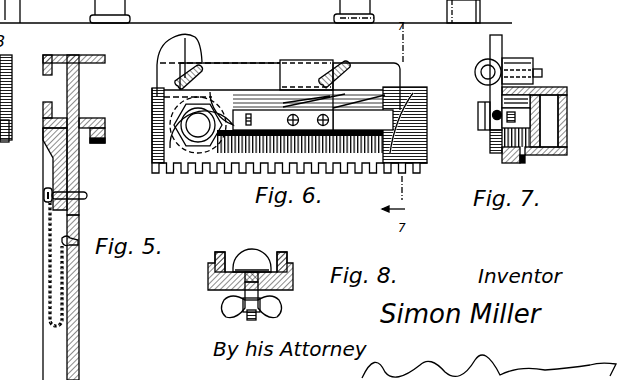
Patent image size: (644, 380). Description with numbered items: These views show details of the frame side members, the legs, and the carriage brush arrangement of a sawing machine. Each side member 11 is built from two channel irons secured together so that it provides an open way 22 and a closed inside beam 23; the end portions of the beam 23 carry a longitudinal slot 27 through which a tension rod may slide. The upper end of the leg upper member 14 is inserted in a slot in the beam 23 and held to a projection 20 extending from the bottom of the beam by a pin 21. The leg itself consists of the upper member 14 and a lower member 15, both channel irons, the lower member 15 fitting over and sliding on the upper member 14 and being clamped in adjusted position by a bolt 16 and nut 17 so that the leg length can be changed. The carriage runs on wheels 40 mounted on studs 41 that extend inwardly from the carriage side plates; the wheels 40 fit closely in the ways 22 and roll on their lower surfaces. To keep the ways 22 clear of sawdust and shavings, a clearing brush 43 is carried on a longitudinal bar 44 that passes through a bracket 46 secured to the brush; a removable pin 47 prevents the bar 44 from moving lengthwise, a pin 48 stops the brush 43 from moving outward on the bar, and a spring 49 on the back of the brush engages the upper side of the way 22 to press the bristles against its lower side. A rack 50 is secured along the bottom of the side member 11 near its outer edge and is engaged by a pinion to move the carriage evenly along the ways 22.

In FIG. 5, the side member 11 is at (77, 56).
In FIG. 6, the side member 11 is at (407, 93).
In FIG. 7, the side member 11 is at (570, 128).
In FIG. 5, the upper member 14 is at (79, 323).
In FIG. 8, the upper member 14 is at (223, 253).
In FIG. 8, the lower member 15 is at (211, 285).
In FIG. 8, the bolt 16 is at (251, 263).
In FIG. 8, the nut 17 is at (284, 309).
In FIG. 5, the projection 20 is at (55, 150).
In FIG. 5, the pin 21 is at (87, 196).
In FIG. 5, the open way 22 is at (97, 64).
In FIG. 7, the open way 22 is at (543, 73).
In FIG. 5, the closed inside beam 23 is at (72, 56).
In FIG. 7, the closed inside beam 23 is at (563, 152).
In FIG. 5, the longitudinal slot 27 is at (48, 90).
In FIG. 6, the wheel 40 is at (180, 167).
In FIG. 6, the stud 41 is at (199, 112).
In FIG. 7, the stud 41 is at (481, 113).
In FIG. 6, the clearing brush 43 is at (266, 110).
In FIG. 7, the clearing brush 43 is at (522, 118).
In FIG. 6, the longitudinal bar 44 is at (230, 77).
In FIG. 7, the longitudinal bar 44 is at (533, 60).
In FIG. 6, the bracket 46 is at (298, 63).
In FIG. 7, the bracket 46 is at (512, 54).
In FIG. 6, the removable pin 47 is at (165, 42).
In FIG. 7, the removable pin 47 is at (496, 94).
In FIG. 6, the pin 48 is at (350, 67).
In FIG. 7, the pin 48 is at (475, 71).
In FIG. 6, the spring 49 is at (333, 107).
In FIG. 7, the spring 49 is at (567, 89).
In FIG. 5, the rack 50 is at (105, 132).
In FIG. 6, the rack 50 is at (222, 166).
In FIG. 7, the rack 50 is at (501, 158).